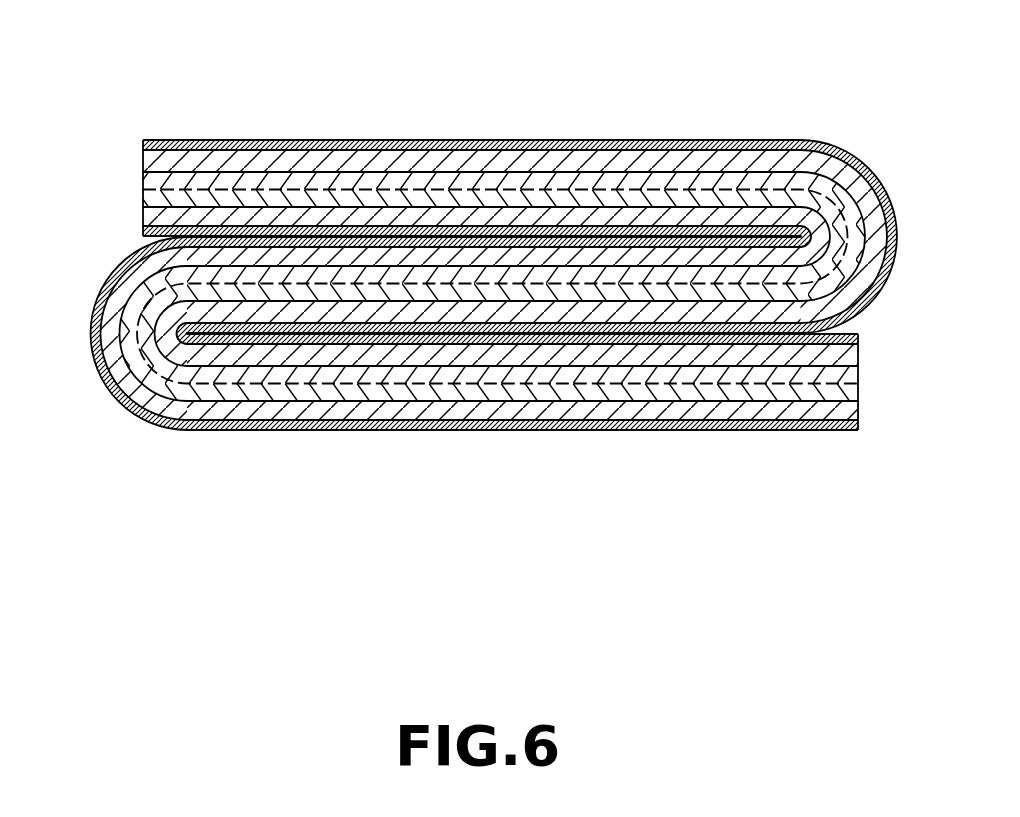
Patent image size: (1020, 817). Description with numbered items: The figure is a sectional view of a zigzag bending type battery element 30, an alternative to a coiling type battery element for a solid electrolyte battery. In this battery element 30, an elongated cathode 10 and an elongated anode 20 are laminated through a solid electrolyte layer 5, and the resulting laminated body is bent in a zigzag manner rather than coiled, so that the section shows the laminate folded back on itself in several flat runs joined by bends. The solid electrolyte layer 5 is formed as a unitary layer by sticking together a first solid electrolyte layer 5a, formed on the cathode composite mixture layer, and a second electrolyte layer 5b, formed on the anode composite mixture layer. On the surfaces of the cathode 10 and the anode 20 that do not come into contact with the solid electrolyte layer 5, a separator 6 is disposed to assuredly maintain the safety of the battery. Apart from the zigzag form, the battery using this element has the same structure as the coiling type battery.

The zigzag bending type battery element 30 is at (470, 302).
The anode 20 is at (168, 163).
The cathode 10 is at (158, 218).
The separator 6 is at (767, 232).
The solid electrolyte layer 5 is at (491, 380).
The first solid electrolyte layer 5a is at (520, 528).
The second electrolyte layer 5b is at (488, 367).